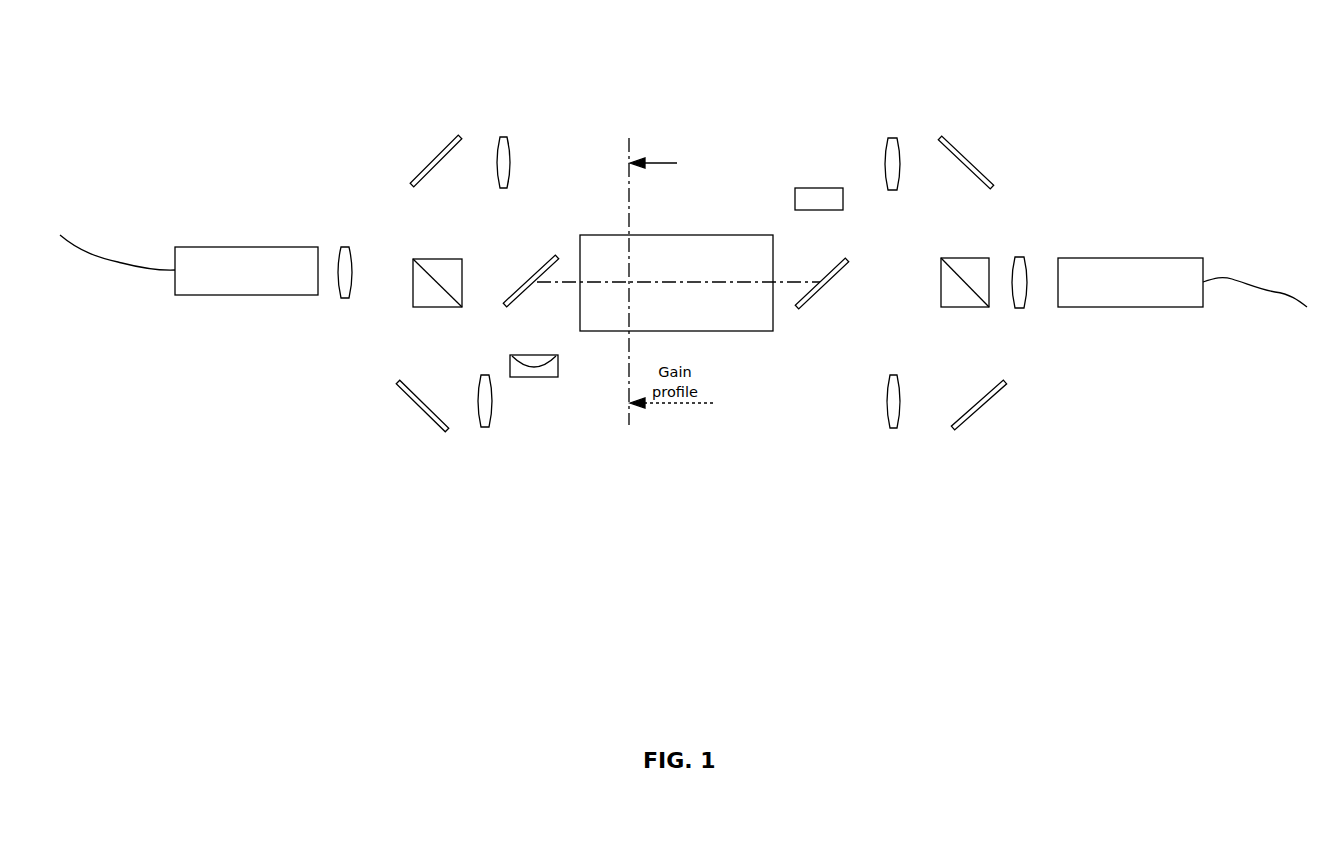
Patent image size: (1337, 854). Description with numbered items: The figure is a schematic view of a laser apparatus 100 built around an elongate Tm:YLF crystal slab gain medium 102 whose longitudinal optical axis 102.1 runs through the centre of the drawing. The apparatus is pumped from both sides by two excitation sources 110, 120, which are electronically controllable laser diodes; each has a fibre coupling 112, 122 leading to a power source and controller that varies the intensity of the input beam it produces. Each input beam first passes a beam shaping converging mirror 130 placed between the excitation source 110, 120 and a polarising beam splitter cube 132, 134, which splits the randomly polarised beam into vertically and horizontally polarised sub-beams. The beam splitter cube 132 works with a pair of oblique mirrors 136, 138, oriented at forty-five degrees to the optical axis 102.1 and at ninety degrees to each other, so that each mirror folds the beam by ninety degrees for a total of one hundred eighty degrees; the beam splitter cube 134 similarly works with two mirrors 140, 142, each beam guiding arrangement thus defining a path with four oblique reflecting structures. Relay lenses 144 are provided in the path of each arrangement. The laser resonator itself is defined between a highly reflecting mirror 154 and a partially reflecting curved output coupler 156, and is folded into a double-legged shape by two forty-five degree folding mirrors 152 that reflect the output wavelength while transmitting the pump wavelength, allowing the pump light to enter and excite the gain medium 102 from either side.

The laser apparatus 100 is at (266, 91).
The gain medium 102 is at (677, 235).
The longitudinal optical axis 102.1 is at (737, 282).
The excitation source 110 is at (249, 247).
The fibre coupling 112 is at (137, 272).
The excitation source 120 is at (1132, 258).
The fibre coupling 122 is at (1225, 277).
The beam shaping converging mirror 130 is at (345, 247).
The polarising beam splitter cube 132 is at (440, 259).
The polarising beam splitter cube 134 is at (968, 258).
The oblique mirror 136 is at (427, 416).
The oblique mirror 138 is at (955, 433).
The mirror 140 is at (948, 138).
The mirror 142 is at (458, 136).
The relay lens 144 is at (503, 137).
The folding mirror 152 is at (554, 258).
The mirror 154 is at (805, 212).
The output coupler 156 is at (545, 355).